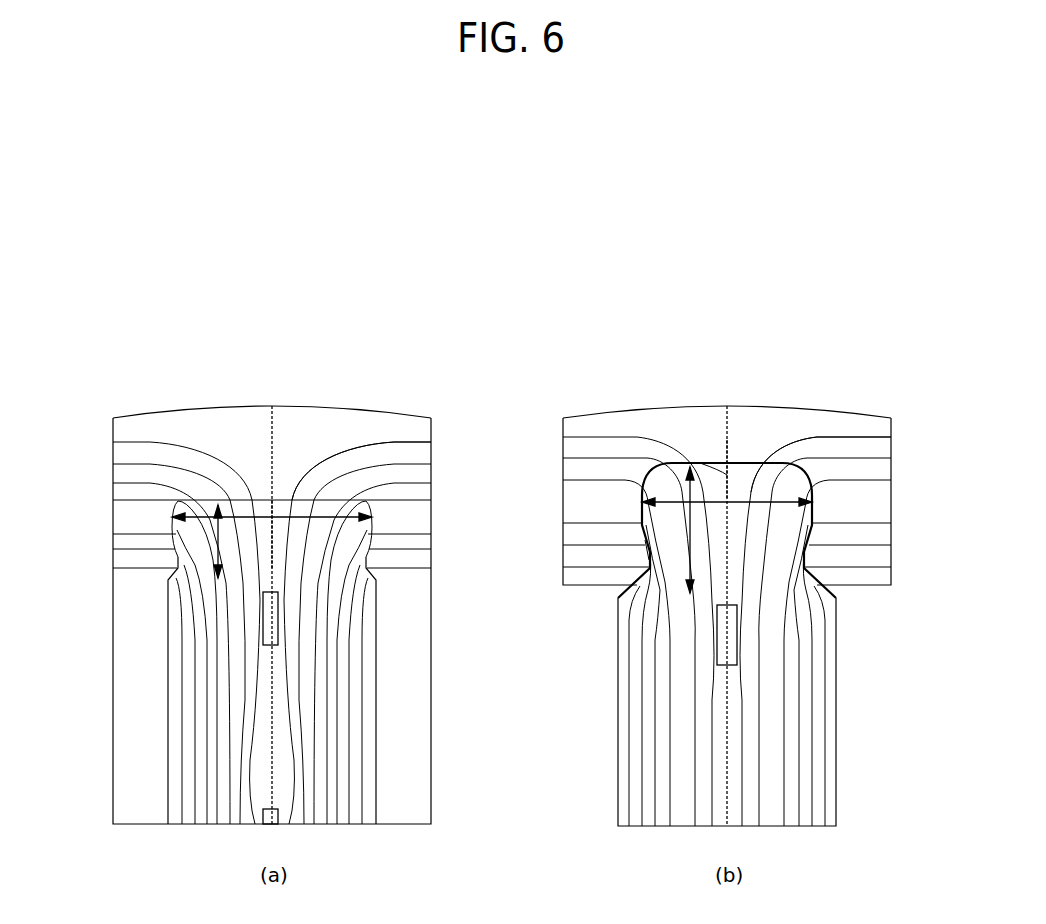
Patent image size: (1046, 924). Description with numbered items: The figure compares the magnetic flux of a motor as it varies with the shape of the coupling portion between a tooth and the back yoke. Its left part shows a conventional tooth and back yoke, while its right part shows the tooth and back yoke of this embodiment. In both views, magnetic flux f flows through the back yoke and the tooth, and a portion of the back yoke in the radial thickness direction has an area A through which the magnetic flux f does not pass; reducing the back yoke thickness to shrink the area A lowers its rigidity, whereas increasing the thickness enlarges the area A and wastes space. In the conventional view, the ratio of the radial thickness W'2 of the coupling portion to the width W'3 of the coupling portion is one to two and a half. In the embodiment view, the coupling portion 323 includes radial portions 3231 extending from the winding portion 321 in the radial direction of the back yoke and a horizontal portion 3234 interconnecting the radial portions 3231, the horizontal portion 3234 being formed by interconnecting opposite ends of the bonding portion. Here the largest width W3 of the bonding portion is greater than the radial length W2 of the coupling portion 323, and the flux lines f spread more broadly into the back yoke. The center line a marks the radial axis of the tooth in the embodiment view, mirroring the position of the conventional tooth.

The winding portion 321 is at (208, 735).
The coupling portion 323 is at (672, 463).
The horizontal portion 3234 is at (752, 480).
The radial portion 3231 is at (640, 540).
The area through which magnetic flux does not pass A is at (258, 428).
The center axis a is at (713, 428).
The magnetic flux f is at (393, 484).
The largest width of the bonding portion W3 is at (806, 525).
The radial length of the coupling portion W2 is at (698, 552).
The width of the coupling portion W'3 is at (212, 496).
The radial thickness of the coupling portion W'2 is at (137, 541).